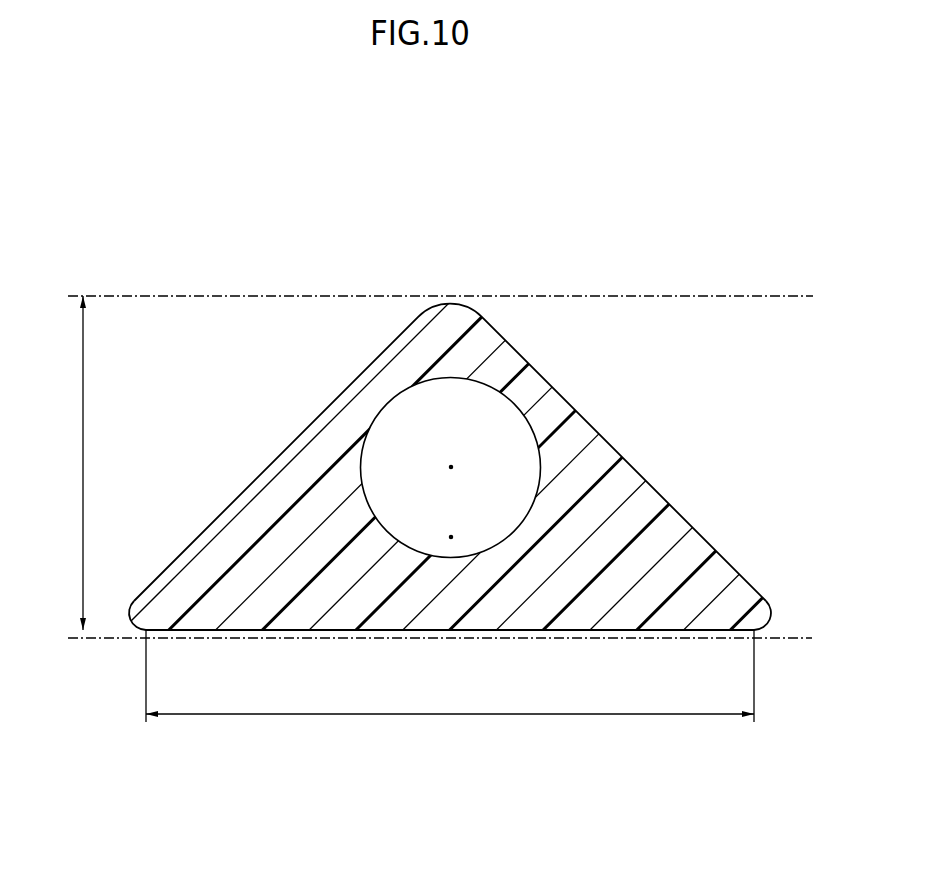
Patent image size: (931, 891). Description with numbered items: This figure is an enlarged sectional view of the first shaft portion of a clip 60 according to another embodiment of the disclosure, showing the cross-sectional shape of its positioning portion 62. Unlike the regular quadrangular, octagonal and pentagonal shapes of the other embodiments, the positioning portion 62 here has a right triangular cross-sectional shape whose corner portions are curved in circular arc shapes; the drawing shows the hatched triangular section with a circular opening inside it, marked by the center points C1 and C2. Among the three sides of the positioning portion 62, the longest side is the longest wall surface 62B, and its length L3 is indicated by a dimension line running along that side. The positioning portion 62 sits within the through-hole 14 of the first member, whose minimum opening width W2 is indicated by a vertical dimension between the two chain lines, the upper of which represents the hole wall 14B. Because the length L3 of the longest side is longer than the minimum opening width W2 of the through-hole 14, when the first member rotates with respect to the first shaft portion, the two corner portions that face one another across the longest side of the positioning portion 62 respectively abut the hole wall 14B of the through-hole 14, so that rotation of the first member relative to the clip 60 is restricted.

The through-hole 14 is at (440, 436).
The hole wall 14B is at (708, 297).
The clip 60 is at (471, 487).
The positioning portion 62 is at (628, 426).
The longest wall surface 62B is at (600, 631).
The center of circular hole C1 is at (451, 467).
The center point C2 is at (451, 537).
The minimum opening width W2 is at (82, 470).
The length of the longest side L3 is at (451, 715).